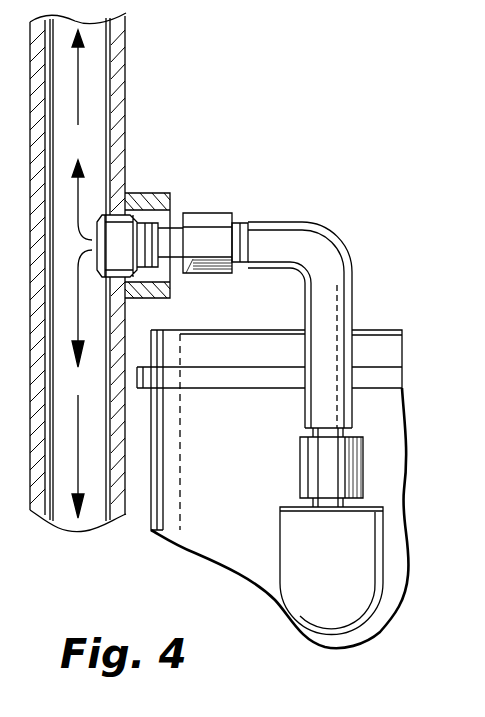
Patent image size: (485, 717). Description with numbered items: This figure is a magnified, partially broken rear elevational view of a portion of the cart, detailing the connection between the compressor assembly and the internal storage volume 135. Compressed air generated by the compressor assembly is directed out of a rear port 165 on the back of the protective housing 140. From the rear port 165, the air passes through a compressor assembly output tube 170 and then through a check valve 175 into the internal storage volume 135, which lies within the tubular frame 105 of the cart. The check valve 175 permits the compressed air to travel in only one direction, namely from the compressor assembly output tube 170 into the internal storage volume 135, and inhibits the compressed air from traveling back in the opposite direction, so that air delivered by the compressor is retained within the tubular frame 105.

The tubular frame 105 is at (128, 174).
The internal storage volume 135 is at (92, 127).
The protective housing 140 is at (218, 508).
The rear port 165 is at (346, 600).
The compressor assembly output tube 170 is at (331, 236).
The check valve 175 is at (209, 221).